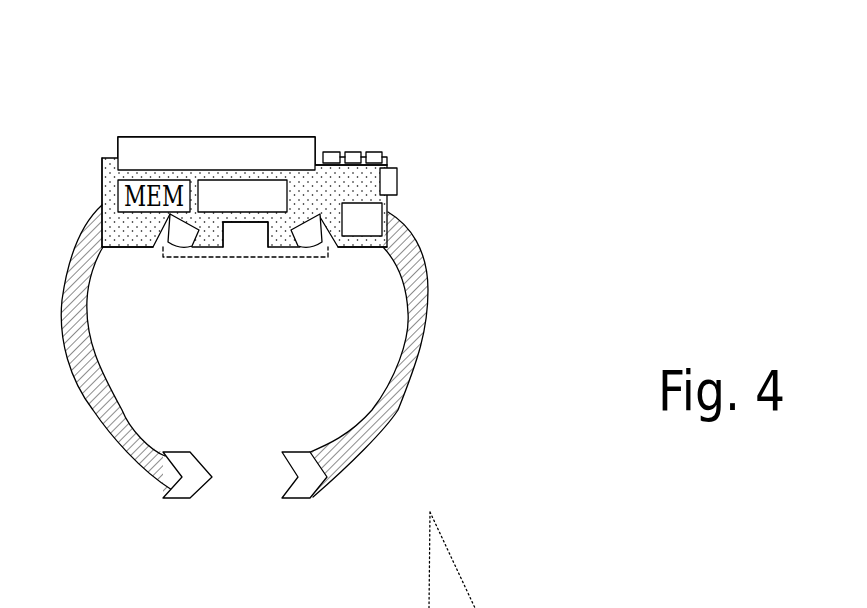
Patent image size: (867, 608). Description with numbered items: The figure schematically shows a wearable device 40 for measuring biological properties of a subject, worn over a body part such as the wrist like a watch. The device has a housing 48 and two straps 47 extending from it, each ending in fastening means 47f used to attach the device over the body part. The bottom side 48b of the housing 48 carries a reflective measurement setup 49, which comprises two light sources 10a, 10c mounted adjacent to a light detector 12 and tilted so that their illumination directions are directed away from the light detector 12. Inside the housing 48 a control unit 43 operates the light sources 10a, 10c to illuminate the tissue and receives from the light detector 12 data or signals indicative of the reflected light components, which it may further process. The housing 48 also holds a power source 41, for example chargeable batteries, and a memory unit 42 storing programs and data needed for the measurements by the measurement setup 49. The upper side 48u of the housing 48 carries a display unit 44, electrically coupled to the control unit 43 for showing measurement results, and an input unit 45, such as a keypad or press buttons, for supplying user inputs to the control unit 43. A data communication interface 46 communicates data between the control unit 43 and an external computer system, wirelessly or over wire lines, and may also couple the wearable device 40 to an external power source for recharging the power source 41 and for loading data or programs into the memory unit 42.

The wearable device 40 is at (244, 351).
The power source 41 is at (363, 236).
The memory unit 42 is at (102, 192).
The control unit 43 is at (287, 193).
The display unit 44 is at (157, 137).
The input unit 45 is at (331, 152).
The data communication interface 46 is at (397, 178).
The straps 47 is at (377, 430).
The fastening means 47f is at (303, 498).
The housing 48 is at (108, 158).
The upper side of the housing 48u is at (222, 108).
The bottom side of the housing 48b is at (258, 273).
The reflective measurement setup 49 is at (187, 258).
The light source 10a is at (167, 248).
The light source 10c is at (315, 250).
The light detector 12 is at (248, 240).